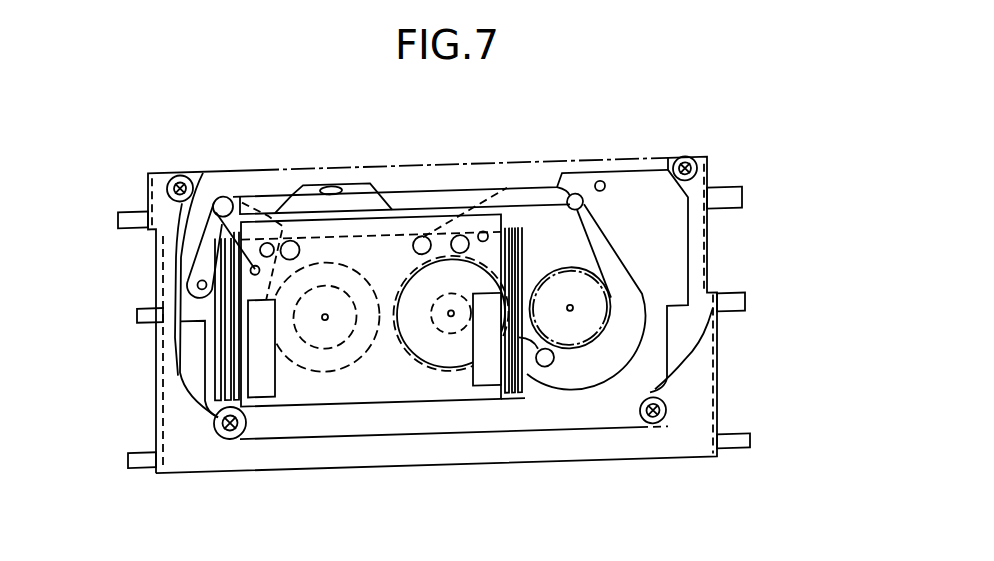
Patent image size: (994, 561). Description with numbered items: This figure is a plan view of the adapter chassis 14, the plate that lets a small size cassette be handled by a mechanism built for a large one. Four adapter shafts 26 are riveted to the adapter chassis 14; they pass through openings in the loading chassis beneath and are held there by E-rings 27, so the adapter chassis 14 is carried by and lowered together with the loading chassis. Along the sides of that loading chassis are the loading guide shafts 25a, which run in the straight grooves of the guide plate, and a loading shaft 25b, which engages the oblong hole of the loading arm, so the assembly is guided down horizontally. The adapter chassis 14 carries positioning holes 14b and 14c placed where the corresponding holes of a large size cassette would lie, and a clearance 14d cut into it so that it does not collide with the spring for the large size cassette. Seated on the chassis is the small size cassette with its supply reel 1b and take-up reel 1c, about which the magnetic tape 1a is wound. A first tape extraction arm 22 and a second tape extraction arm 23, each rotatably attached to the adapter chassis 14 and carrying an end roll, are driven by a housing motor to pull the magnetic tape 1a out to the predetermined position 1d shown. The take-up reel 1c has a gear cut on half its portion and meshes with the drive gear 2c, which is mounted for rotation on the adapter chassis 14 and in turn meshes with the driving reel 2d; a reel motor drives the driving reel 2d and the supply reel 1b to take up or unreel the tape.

The magnetic tape 1a is at (378, 236).
The supply reel 1b is at (318, 365).
The take-up reel 1c is at (447, 348).
The predetermined position 1d is at (300, 186).
The drive gear 2c is at (543, 370).
The driving reel 2d is at (588, 325).
The adapter chassis 14 is at (650, 168).
The positioning hole 14b is at (598, 185).
The positioning hole 14c is at (334, 186).
The clearance 14d is at (192, 366).
The first tape extraction arm 22 is at (214, 198).
The second tape extraction arm 23 is at (609, 245).
The loading guide shaft 25a is at (120, 222).
The loading shaft 25b is at (140, 318).
The adapter shaft 26 is at (172, 180).
The E-ring 27 is at (160, 183).